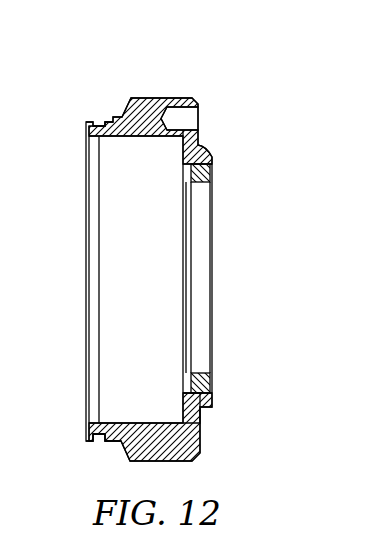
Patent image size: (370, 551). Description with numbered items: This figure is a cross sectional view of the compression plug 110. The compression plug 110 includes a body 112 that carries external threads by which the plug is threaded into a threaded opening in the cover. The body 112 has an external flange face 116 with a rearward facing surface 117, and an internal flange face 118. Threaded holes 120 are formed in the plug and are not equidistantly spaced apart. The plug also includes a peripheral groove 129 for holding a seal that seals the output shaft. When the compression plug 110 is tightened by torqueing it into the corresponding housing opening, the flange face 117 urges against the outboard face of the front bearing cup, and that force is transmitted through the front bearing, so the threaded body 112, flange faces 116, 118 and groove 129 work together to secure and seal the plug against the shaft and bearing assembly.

The compression plug 110 is at (162, 245).
The body 112 is at (186, 449).
The external flange face 116 is at (200, 137).
The rearward facing surface 117 is at (181, 407).
The internal flange face 118 is at (86, 430).
The threaded holes 120 is at (178, 119).
The peripheral groove 129 is at (93, 123).